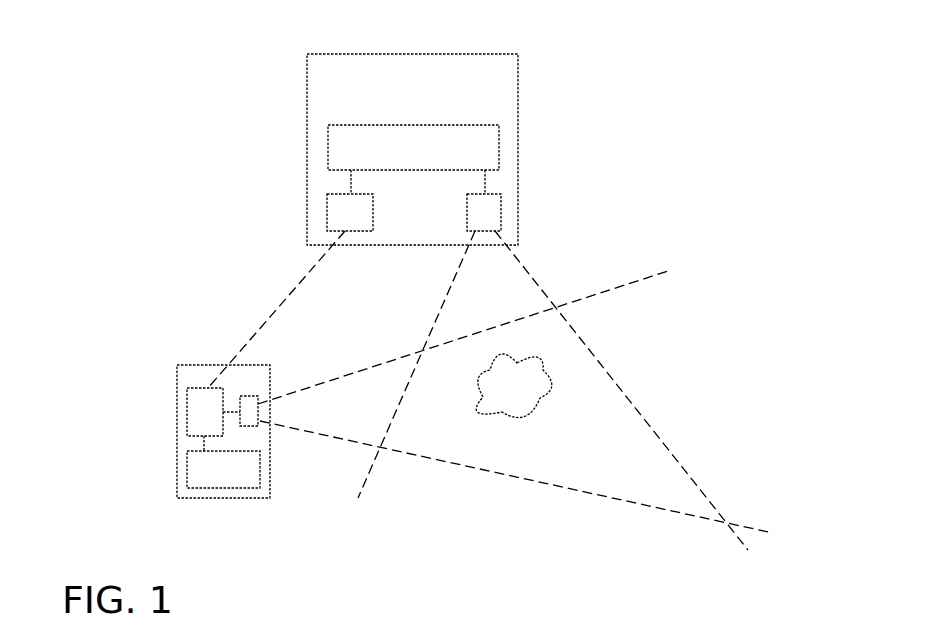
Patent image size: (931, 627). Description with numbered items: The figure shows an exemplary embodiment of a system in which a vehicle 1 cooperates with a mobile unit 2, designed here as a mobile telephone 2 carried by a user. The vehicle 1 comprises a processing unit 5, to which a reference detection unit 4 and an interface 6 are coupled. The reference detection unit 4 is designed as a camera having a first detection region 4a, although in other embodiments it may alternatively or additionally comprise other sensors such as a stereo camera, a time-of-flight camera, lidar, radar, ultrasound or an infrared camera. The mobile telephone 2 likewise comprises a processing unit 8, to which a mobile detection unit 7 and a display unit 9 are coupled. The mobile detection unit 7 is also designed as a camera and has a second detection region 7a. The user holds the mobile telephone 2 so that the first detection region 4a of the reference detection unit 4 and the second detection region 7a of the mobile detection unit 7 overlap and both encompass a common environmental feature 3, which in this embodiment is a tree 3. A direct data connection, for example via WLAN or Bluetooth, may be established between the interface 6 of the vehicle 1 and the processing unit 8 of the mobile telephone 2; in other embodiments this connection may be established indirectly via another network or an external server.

The vehicle 1 is at (488, 75).
The mobile unit 2 is at (178, 387).
The environmental feature 3 is at (504, 399).
The reference detection unit 4 is at (475, 226).
The first detection region 4a is at (545, 274).
The processing unit 5 is at (404, 161).
The interface 6 is at (342, 226).
The mobile detection unit 7 is at (250, 398).
The second detection region 7a is at (321, 446).
The processing unit 8 is at (195, 424).
The display unit 9 is at (214, 482).